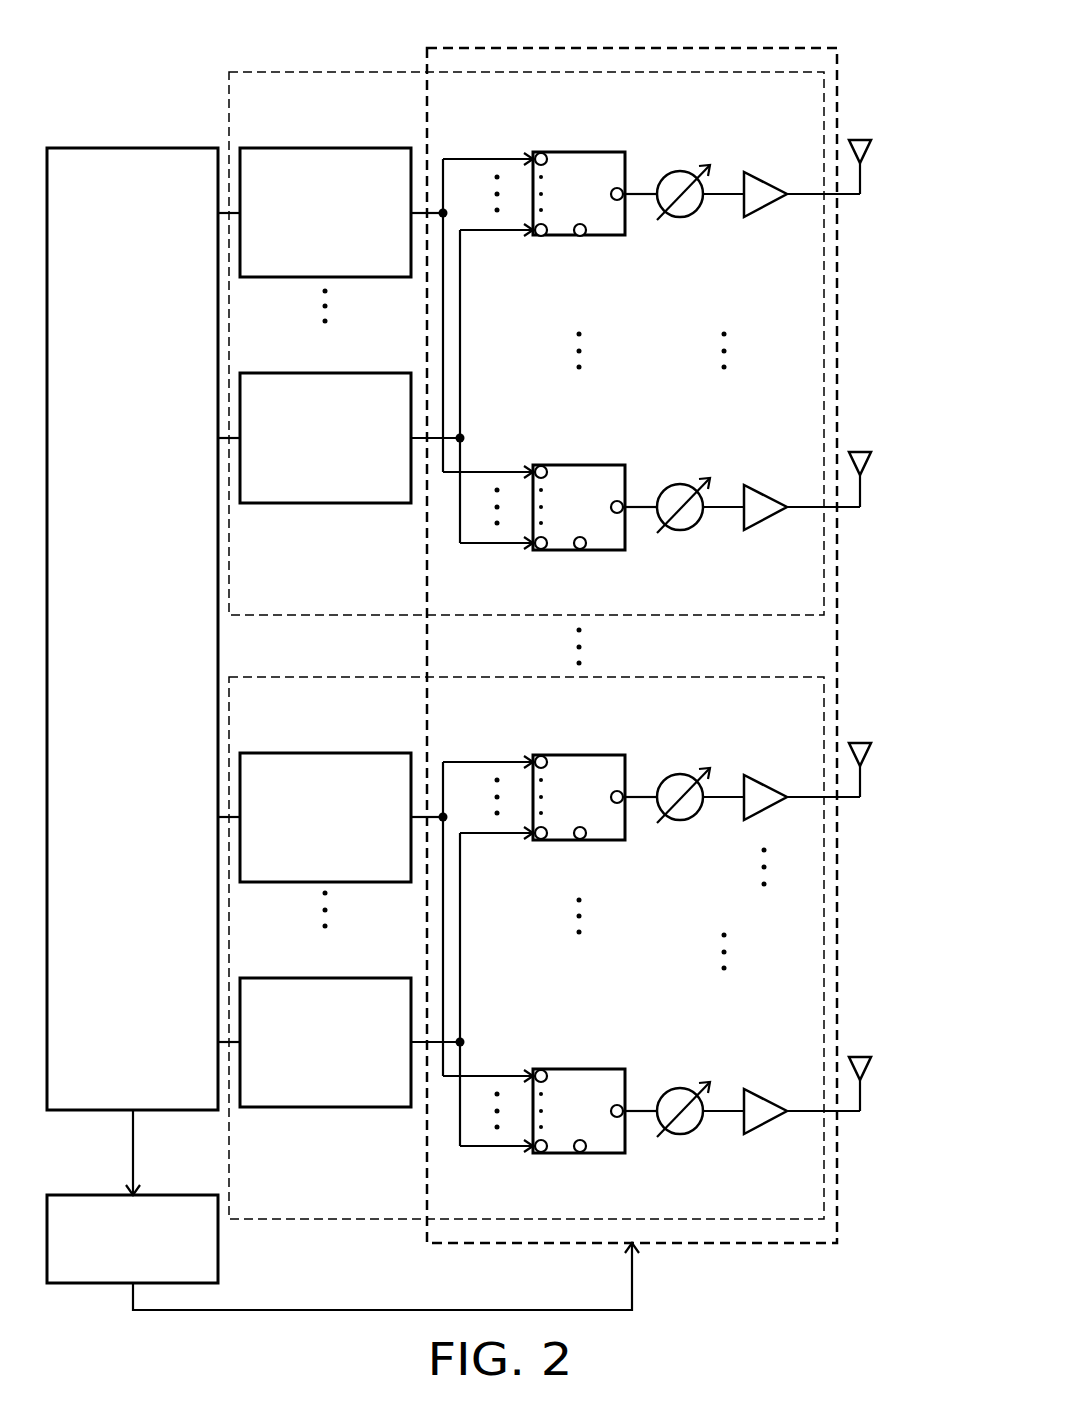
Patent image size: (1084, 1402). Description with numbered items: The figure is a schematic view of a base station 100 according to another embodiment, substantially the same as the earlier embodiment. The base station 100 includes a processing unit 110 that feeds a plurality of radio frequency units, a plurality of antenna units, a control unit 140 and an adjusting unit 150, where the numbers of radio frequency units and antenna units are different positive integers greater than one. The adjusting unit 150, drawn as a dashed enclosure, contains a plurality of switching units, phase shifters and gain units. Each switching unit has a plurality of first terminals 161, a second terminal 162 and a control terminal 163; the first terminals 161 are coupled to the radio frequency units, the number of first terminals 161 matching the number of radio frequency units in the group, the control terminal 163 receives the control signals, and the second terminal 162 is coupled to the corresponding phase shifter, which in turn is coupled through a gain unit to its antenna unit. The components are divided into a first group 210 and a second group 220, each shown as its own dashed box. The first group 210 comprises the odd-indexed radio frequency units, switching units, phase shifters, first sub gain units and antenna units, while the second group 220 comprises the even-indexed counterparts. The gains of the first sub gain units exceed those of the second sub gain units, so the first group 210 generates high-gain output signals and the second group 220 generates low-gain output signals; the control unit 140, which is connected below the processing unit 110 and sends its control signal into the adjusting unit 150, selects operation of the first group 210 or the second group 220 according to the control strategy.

The base station 100 is at (97, 48).
The processing unit 110 is at (133, 148).
The control unit 140 is at (218, 1262).
The adjusting unit 150 is at (427, 48).
The first terminal 161 is at (535, 153).
The second terminal 162 is at (617, 205).
The control terminal 163 is at (578, 237).
The first group 210 is at (229, 72).
The second group 220 is at (229, 677).